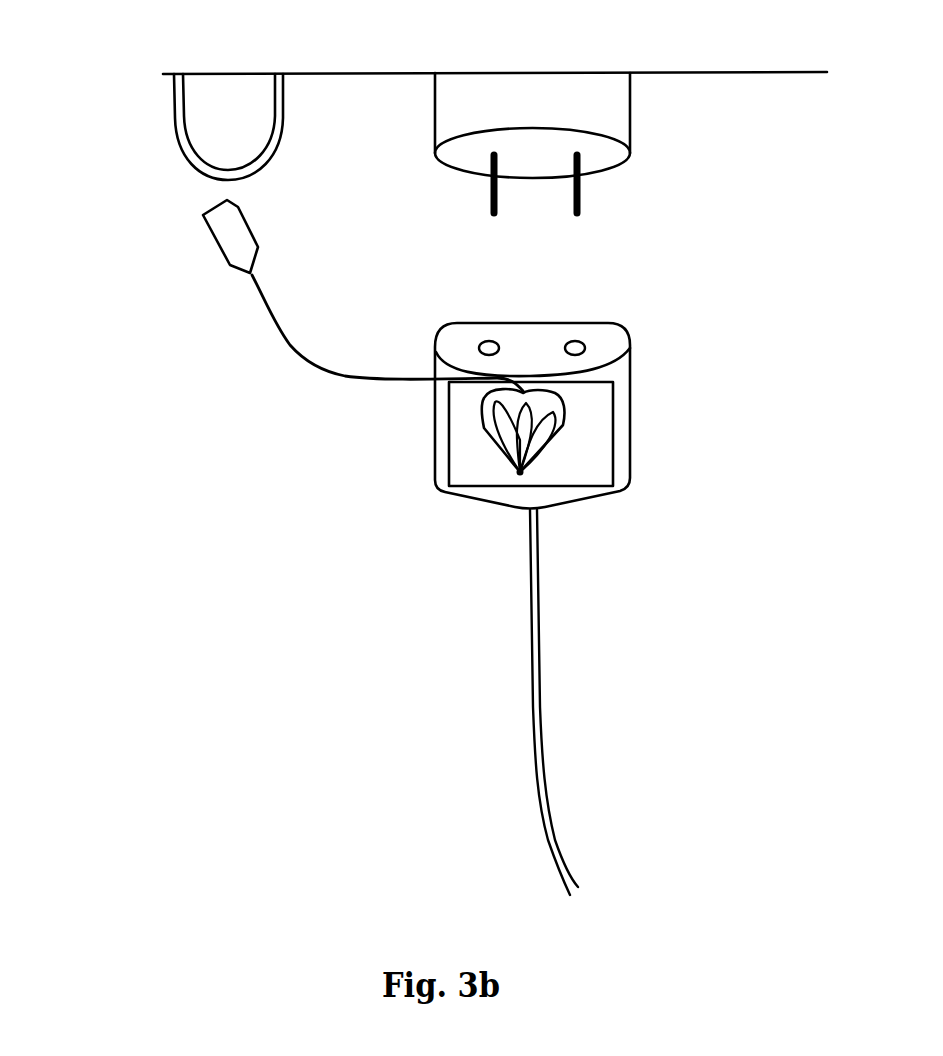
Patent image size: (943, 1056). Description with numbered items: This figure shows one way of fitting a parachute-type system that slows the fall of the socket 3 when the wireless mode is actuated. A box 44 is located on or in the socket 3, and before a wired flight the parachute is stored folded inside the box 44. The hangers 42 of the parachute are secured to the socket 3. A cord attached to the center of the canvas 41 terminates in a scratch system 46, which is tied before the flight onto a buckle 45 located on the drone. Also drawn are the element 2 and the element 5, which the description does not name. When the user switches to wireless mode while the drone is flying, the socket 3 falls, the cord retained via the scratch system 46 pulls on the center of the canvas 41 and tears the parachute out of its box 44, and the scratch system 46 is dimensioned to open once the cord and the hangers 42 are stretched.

The power plug / charger 2 is at (632, 112).
The socket 3 is at (437, 430).
The cable 5 is at (533, 707).
The canvas 41 is at (545, 400).
The hangers 42 is at (535, 458).
The box 44 is at (613, 447).
The buckle 45 is at (175, 127).
The scratch system 46 is at (205, 237).